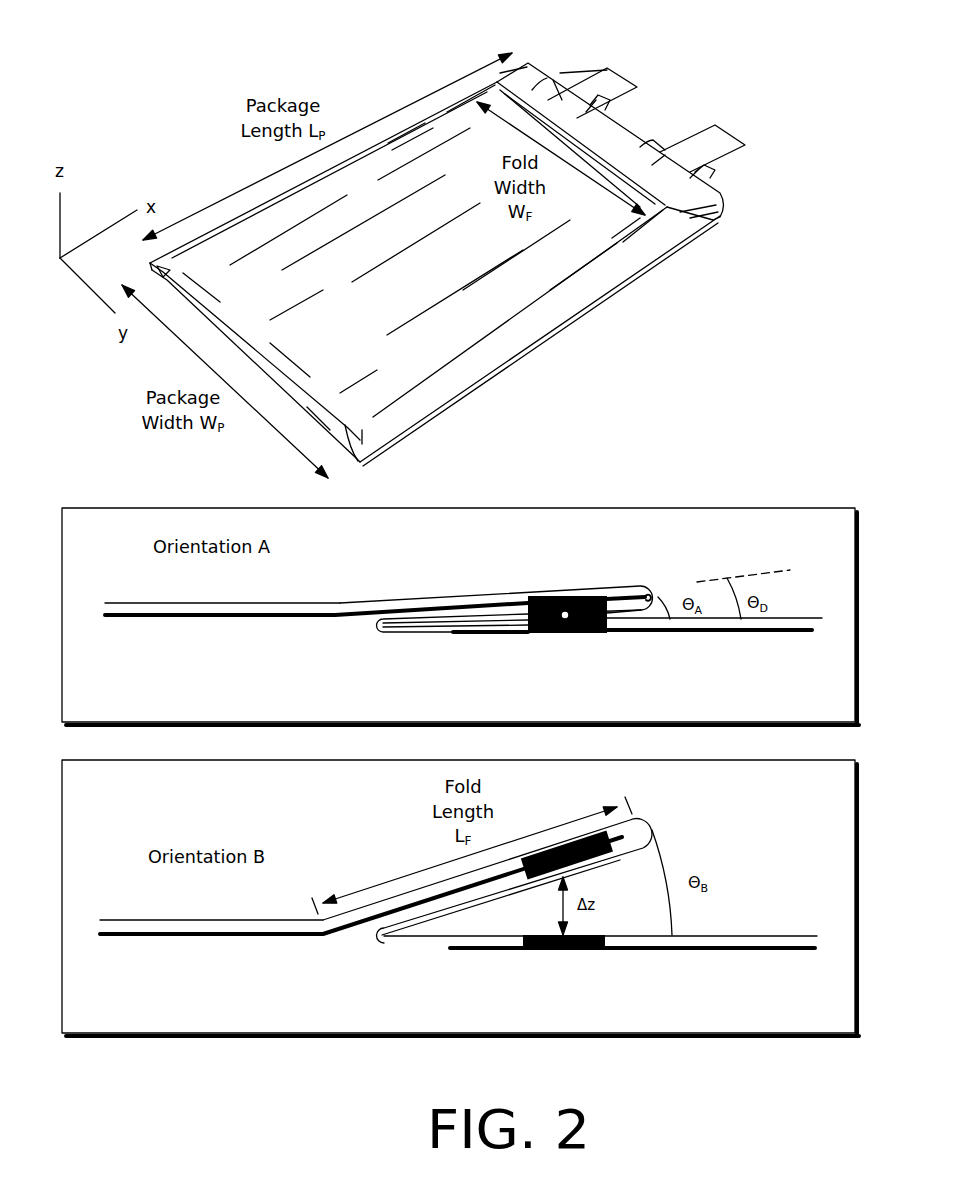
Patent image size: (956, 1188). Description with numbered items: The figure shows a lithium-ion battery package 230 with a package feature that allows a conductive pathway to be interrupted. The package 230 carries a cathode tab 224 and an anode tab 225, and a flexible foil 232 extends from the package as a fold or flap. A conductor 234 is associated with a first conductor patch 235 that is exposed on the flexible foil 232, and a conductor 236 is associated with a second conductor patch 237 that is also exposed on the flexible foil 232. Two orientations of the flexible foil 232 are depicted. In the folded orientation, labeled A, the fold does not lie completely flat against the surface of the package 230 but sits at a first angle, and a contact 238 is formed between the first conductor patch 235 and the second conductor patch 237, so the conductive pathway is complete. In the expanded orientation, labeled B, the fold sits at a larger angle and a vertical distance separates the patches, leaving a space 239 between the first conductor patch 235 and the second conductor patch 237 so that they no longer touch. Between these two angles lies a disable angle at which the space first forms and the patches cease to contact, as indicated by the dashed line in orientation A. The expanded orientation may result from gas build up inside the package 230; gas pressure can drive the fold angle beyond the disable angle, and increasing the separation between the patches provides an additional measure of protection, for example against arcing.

The lithium-ion battery package 230 is at (473, 477).
The cathode tab 224 is at (610, 64).
The anode tab 225 is at (718, 129).
The flexible foil 232 is at (670, 227).
The conductor 234 is at (240, 617).
The first conductor patch 235 is at (560, 602).
The conductor 236 is at (667, 633).
The second conductor patch 237 is at (560, 637).
The contact 238 is at (577, 637).
The space 239 is at (560, 905).